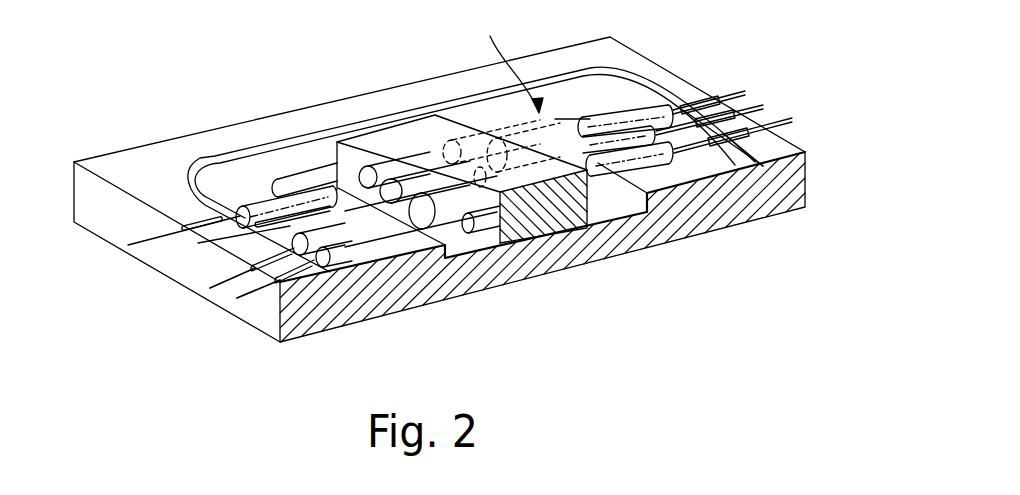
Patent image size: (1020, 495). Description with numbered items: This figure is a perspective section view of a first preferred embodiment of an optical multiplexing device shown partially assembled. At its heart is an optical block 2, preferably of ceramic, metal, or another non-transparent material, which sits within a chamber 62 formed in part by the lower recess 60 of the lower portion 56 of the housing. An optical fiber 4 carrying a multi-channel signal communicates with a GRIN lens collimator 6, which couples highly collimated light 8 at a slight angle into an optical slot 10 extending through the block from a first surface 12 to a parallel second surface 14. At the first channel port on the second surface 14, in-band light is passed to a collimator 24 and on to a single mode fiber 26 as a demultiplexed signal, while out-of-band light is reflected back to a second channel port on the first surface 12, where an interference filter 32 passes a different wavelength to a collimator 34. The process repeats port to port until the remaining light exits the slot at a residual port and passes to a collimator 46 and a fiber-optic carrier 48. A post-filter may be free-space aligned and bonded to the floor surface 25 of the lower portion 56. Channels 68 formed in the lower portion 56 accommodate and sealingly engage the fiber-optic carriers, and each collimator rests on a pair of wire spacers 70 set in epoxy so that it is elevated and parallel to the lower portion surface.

The optical block 2 is at (363, 142).
The optical fiber 4 is at (152, 242).
The GRIN lens collimator 6 is at (262, 205).
The collimated light 8 is at (325, 183).
The optical slot 10 is at (460, 213).
The first surface 12 is at (488, 238).
The second surface 14 is at (457, 118).
The collimator 24 is at (620, 117).
The floor surface 25 is at (572, 107).
The single mode fiber 26 is at (733, 92).
The interference filter 32 is at (403, 173).
The collimator 34 is at (242, 247).
The collimator 46 is at (663, 155).
The fiber-optic carrier 48 is at (785, 120).
The lower portion 56 is at (797, 187).
The lower recess 60 is at (718, 177).
The chamber 62 is at (511, 64).
The channels 68 is at (198, 222).
The wire spacers 70 is at (662, 192).